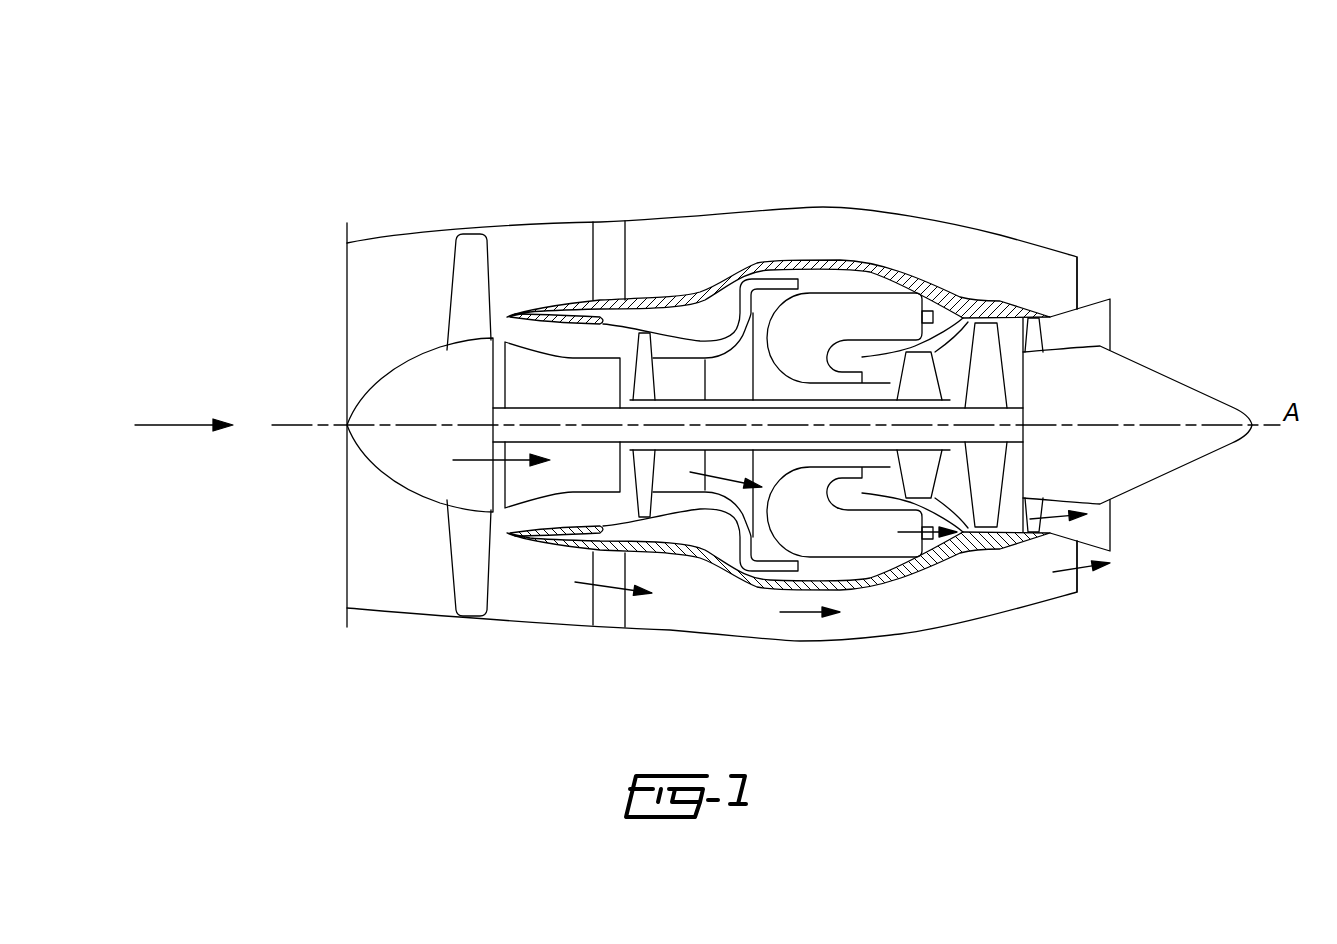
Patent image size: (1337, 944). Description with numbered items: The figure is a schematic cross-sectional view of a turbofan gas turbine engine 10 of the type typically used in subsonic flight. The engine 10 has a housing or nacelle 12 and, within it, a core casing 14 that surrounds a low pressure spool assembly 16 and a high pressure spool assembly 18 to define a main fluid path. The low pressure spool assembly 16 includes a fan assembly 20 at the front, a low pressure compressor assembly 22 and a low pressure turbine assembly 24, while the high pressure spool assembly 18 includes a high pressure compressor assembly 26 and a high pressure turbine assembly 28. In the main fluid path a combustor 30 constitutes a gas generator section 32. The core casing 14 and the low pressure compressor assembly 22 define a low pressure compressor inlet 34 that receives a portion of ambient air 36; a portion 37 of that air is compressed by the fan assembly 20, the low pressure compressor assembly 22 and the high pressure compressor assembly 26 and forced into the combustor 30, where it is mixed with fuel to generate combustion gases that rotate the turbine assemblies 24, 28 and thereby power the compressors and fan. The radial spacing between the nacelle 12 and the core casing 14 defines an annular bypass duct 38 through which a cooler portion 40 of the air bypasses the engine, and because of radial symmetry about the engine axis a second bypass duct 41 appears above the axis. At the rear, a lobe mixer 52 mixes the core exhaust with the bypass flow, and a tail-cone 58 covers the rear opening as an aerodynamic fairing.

The turbofan gas turbine engine 10 is at (1140, 89).
The nacelle 12 is at (747, 215).
The core casing 14 is at (792, 262).
The low pressure spool assembly 16 is at (573, 408).
The high pressure spool assembly 18 is at (690, 400).
The fan assembly 20 is at (450, 263).
The low pressure compressor assembly 22 is at (528, 363).
The low pressure turbine assembly 24 is at (1012, 335).
The high pressure compressor assembly 26 is at (657, 333).
The high pressure turbine assembly 28 is at (965, 320).
The combustor 30 is at (903, 302).
The gas generator section 32 is at (835, 282).
The low pressure compressor inlet 34 is at (500, 532).
The ambient air 36 is at (178, 427).
The compressed air 37 is at (477, 460).
The annular bypass duct 38 is at (923, 620).
The bypass air 40 is at (1082, 560).
The second bypass duct 41 is at (1037, 262).
The lobe mixer 52 is at (1080, 333).
The tail-cone 58 is at (1193, 380).